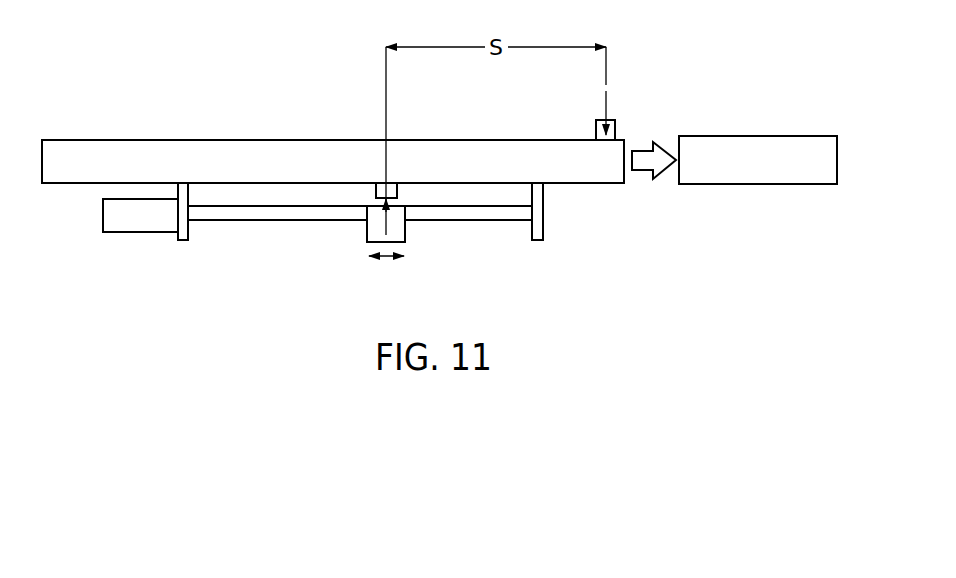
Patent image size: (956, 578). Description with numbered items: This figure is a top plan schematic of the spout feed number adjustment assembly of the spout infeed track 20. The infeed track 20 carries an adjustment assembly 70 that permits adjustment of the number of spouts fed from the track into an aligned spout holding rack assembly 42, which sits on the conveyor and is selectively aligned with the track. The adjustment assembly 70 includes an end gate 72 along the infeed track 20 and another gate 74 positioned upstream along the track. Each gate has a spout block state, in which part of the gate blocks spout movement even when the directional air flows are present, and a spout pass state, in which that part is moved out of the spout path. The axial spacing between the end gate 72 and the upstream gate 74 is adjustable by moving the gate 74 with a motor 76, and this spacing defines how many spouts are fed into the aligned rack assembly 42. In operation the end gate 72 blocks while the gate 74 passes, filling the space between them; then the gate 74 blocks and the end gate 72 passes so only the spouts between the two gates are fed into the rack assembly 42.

The spout infeed track 20 is at (299, 139).
The end gate 72 is at (617, 122).
The gate 74 is at (397, 190).
The adjustment assembly 70 is at (569, 225).
The motor 76 is at (137, 234).
The spout holding rack assembly 42 is at (731, 186).